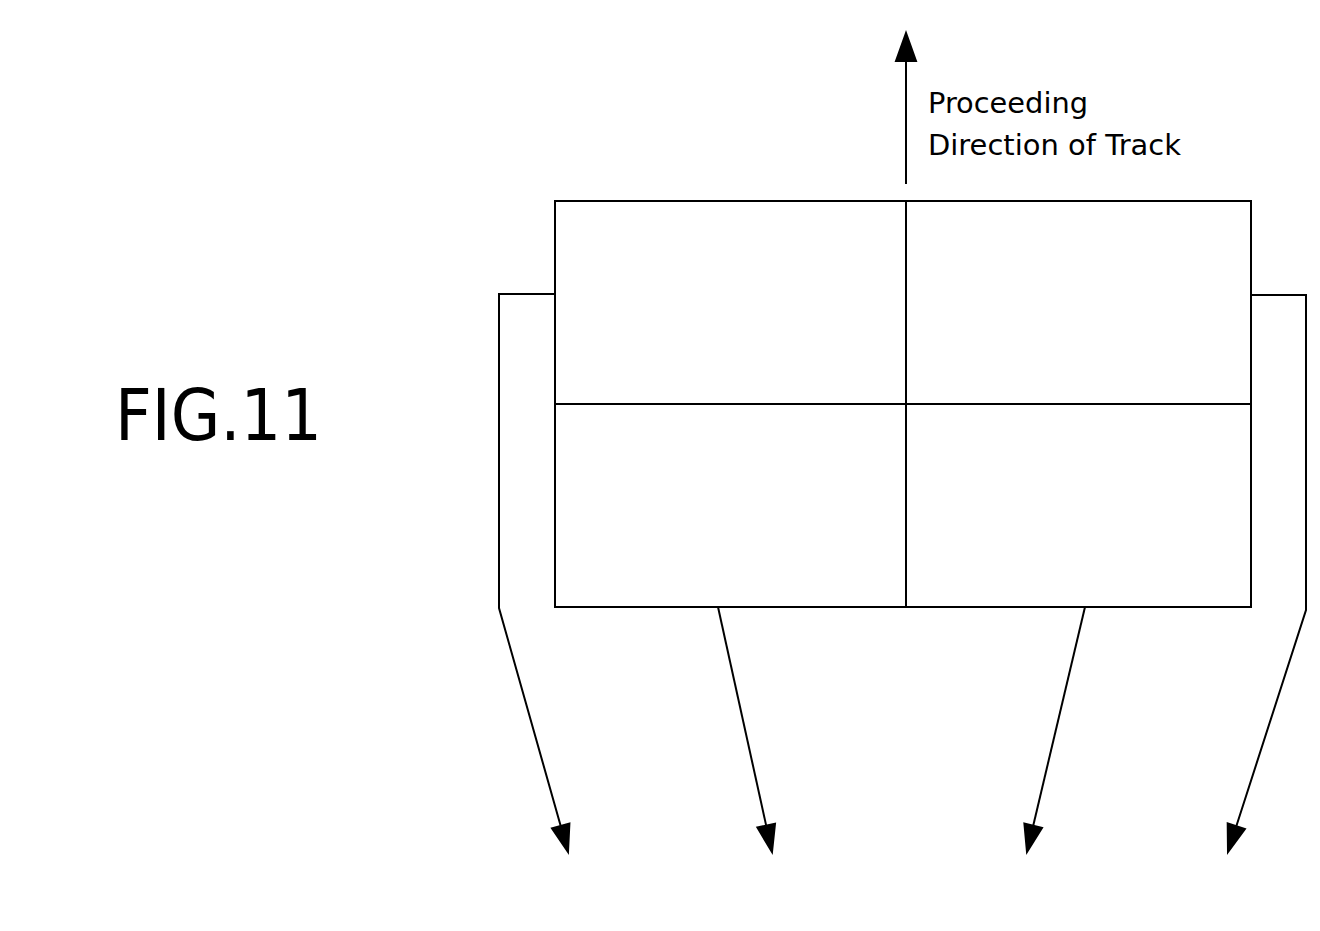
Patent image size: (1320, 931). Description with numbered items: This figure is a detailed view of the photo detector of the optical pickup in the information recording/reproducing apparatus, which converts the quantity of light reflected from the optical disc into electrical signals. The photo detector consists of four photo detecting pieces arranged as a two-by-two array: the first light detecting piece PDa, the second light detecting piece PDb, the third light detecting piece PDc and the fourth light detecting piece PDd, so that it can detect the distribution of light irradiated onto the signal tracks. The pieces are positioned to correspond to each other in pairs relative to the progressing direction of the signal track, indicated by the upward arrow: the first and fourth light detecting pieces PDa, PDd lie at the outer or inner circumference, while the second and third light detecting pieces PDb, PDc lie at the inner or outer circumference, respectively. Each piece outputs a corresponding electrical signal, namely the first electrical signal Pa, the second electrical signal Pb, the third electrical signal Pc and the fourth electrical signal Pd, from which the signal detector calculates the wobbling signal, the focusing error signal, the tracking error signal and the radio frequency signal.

The first light detecting piece PDa is at (730, 302).
The second light detecting piece PDb is at (1078, 302).
The third light detecting piece PDc is at (1078, 505).
The fourth light detecting piece PDd is at (730, 505).
The first electrical signal Pa is at (529, 573).
The second electrical signal Pb is at (1258, 573).
The third electrical signal Pc is at (1043, 729).
The fourth electrical signal Pd is at (736, 729).